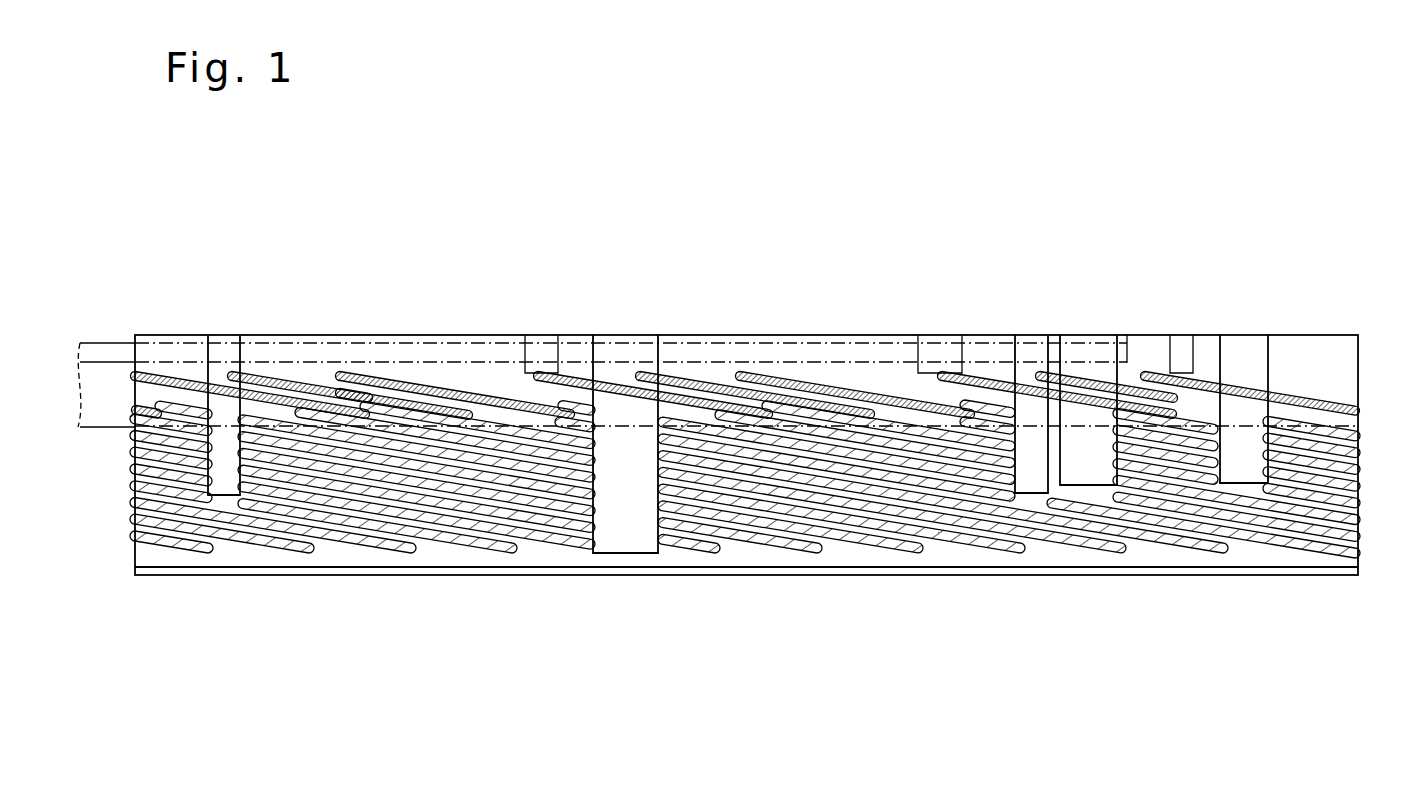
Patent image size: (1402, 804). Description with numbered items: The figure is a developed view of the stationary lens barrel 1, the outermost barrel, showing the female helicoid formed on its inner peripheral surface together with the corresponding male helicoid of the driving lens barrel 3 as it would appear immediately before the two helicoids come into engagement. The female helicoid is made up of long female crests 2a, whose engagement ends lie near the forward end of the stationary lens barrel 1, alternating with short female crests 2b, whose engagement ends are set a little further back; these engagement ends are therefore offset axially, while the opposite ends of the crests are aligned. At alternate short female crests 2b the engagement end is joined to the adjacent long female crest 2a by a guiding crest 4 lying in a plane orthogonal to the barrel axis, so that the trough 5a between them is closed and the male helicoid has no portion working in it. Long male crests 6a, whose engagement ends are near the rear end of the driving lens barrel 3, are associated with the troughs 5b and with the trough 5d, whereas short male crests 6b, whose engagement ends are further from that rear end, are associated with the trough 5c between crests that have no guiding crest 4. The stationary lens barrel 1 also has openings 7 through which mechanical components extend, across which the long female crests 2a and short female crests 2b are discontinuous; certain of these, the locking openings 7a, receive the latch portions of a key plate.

The stationary lens barrel 1 is at (250, 558).
The long female crest 2a is at (163, 403).
The short female crest 2b is at (447, 445).
The driving lens barrel 3 is at (178, 345).
The guiding crest 4 is at (300, 400).
The trough 5a is at (380, 433).
The trough 5b is at (530, 443).
The trough 5c is at (567, 497).
The trough 5d is at (290, 433).
The long male crest 6a is at (200, 382).
The short male crest 6b is at (330, 378).
The opening 7 is at (637, 540).
The locking opening 7a is at (223, 487).